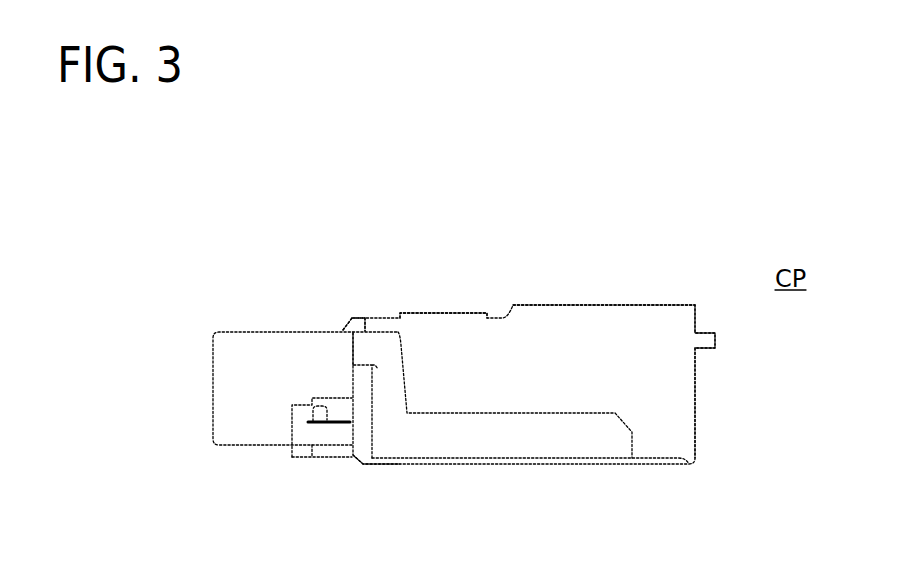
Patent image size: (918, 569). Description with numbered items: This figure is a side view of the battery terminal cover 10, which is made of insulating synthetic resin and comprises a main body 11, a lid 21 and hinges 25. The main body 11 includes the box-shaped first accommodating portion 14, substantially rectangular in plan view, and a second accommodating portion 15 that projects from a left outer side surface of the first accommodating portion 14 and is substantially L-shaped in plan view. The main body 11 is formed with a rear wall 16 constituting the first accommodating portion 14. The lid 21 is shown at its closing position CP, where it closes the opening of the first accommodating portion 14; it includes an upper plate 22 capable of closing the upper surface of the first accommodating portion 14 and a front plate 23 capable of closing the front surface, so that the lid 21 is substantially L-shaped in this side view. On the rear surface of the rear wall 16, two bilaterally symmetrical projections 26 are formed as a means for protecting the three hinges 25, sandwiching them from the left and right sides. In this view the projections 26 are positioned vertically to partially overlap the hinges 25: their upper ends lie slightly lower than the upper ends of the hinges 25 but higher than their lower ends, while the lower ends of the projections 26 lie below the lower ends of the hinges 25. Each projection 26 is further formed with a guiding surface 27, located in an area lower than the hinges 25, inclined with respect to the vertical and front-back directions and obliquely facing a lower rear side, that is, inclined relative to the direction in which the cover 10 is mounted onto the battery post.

The cover 10 is at (683, 231).
The main body 11 is at (363, 465).
The first accommodating portion 14 is at (591, 283).
The second accommodating portion 15 is at (279, 322).
The rear wall 16 is at (357, 375).
The lid 21 is at (694, 305).
The upper plate 22 is at (545, 305).
The front plate 23 is at (695, 403).
The hinges 25 is at (341, 330).
The projections 26 is at (343, 347).
The guiding surface 27 is at (345, 368).